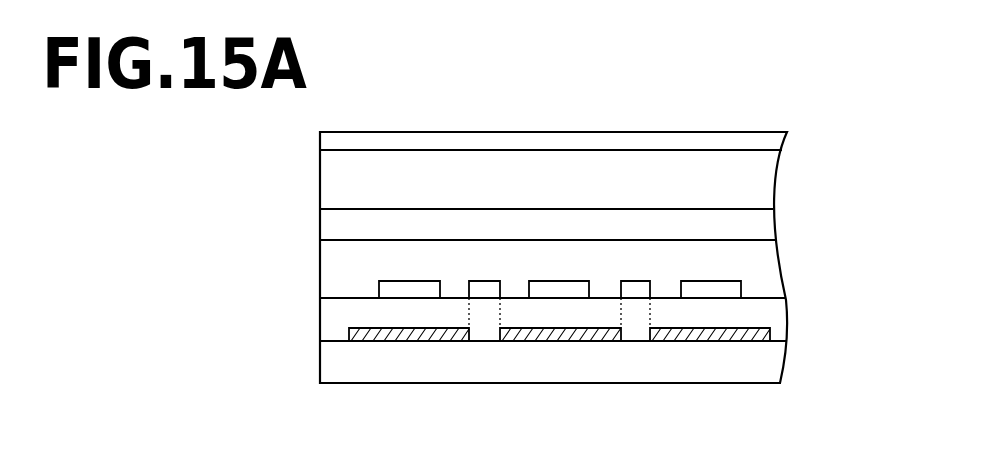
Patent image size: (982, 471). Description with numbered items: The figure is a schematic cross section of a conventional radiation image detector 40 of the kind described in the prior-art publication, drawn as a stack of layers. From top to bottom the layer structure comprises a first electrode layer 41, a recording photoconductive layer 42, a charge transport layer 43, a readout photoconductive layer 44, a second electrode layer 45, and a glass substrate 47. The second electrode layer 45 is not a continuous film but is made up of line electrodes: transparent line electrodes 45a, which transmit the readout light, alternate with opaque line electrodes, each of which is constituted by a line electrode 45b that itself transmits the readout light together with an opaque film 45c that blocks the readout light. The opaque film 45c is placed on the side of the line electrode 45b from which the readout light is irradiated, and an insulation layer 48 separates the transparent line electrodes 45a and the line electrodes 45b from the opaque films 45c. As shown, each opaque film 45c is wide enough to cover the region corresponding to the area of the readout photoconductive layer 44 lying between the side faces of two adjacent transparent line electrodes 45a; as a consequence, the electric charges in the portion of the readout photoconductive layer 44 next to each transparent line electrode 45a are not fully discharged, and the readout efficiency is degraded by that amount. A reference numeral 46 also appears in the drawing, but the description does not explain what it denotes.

The radiation image detector 40 is at (797, 93).
The first electrode layer 41 is at (330, 140).
The recording photoconductive layer 42 is at (330, 181).
The charge transport layer 43 is at (330, 228).
The readout photoconductive layer 44 is at (330, 271).
The second electrode layer 45 is at (613, 341).
The transparent line electrode 45a is at (485, 290).
The line electrode 45b is at (410, 290).
The opaque film 45c is at (365, 333).
The counter electrode 46 is at (752, 207).
The glass substrate 47 is at (763, 352).
The insulation layer 48 is at (330, 315).